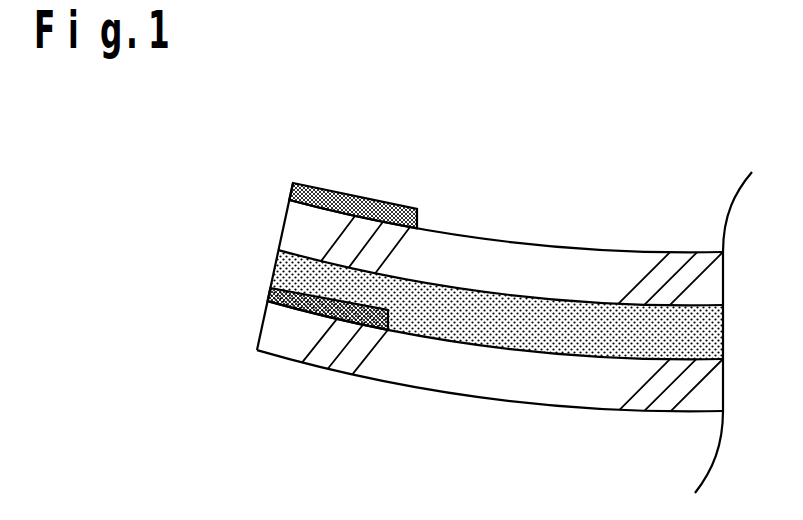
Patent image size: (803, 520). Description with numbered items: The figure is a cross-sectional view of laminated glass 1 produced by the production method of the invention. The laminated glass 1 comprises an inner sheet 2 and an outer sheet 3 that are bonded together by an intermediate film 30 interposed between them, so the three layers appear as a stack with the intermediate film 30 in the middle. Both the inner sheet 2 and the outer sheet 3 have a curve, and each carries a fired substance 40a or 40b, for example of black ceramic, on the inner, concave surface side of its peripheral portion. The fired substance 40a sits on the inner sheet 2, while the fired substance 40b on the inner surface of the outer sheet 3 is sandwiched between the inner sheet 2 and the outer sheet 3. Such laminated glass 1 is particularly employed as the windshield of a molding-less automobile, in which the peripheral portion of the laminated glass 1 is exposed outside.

The laminated glass 1 is at (452, 305).
The inner sheet 2 is at (300, 232).
The outer sheet 3 is at (283, 325).
The intermediate film 30 is at (523, 310).
The fired substance 40a is at (330, 192).
The fired substance 40b is at (388, 310).